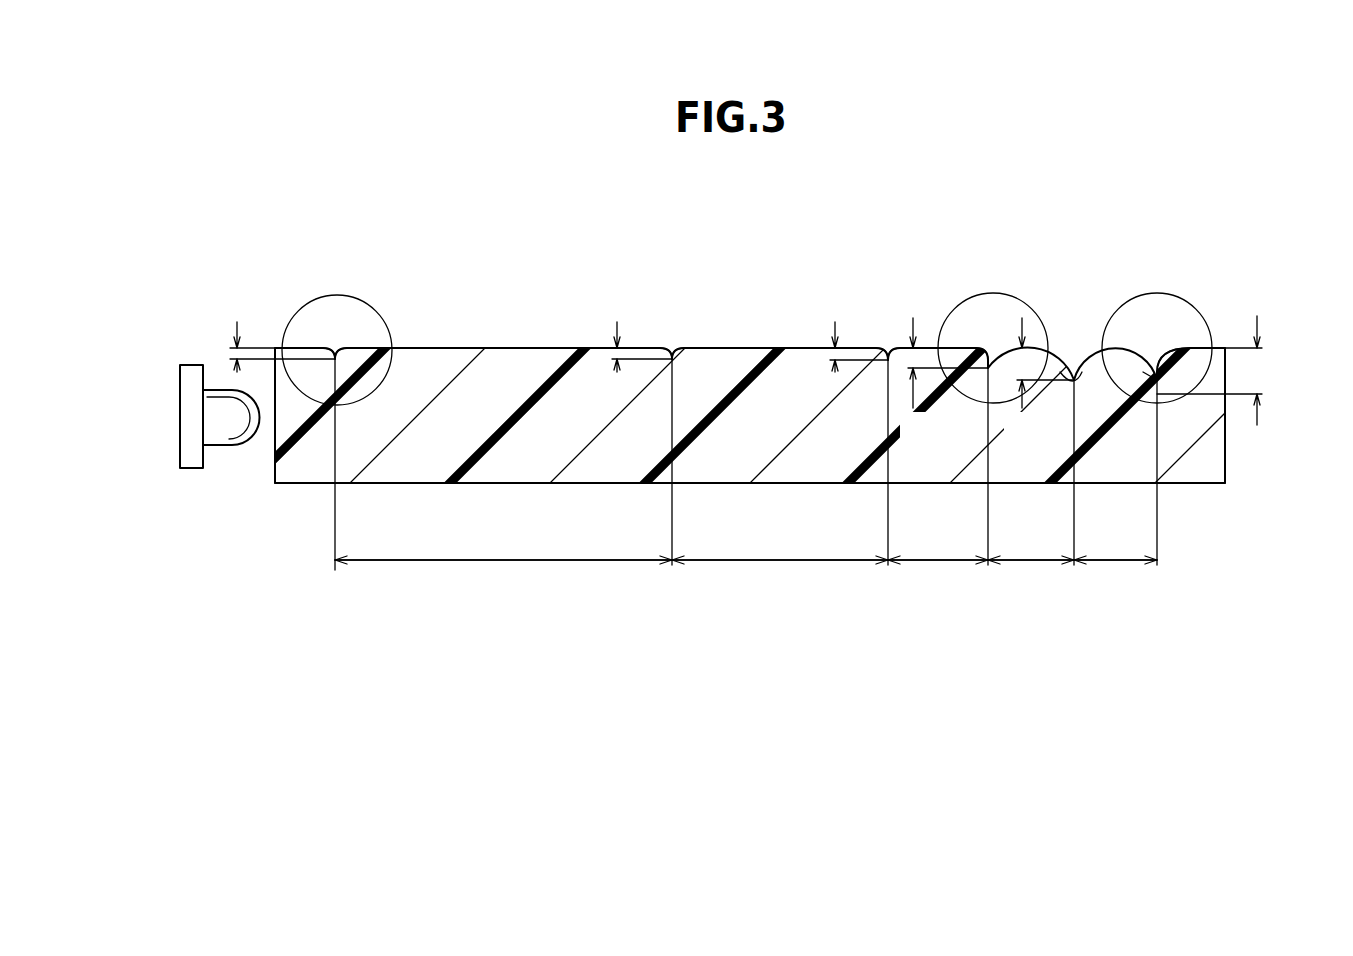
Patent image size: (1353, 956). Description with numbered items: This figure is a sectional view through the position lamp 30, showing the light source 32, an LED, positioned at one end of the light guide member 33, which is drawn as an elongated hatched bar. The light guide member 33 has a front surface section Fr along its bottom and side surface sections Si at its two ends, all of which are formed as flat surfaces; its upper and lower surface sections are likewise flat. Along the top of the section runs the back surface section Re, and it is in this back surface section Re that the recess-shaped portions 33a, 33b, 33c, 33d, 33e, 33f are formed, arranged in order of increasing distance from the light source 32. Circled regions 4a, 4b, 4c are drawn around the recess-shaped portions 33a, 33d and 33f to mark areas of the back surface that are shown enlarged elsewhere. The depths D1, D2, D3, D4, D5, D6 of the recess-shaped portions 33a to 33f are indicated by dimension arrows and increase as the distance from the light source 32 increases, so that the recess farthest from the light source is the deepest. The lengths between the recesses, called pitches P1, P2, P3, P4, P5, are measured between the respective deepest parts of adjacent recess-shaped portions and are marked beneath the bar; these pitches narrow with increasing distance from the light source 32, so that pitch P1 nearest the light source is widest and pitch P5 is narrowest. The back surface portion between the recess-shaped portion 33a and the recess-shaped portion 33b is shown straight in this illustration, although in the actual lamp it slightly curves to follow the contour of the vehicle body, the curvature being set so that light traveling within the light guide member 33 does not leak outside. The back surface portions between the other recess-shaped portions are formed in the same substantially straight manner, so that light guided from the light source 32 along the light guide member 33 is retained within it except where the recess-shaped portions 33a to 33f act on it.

The position lamp 30 is at (1166, 168).
The light source 32 is at (180, 418).
The light guide member 33 is at (763, 347).
The recess-shaped portion 33a is at (335, 357).
The recess-shaped portion 33b is at (672, 348).
The recess-shaped portion 33c is at (888, 348).
The recess-shaped portion 33d is at (988, 366).
The recess-shaped portion 33e is at (1074, 378).
The recess-shaped portion 33f is at (1157, 378).
The enlarged view region 4a is at (375, 308).
The enlarged view region 4b is at (1032, 307).
The enlarged view region 4c is at (1195, 307).
The back surface section Re is at (515, 348).
The side surface section Si is at (273, 472).
The front surface section Fr is at (302, 486).
The depth D1 is at (277, 332).
The depth D2 is at (635, 332).
The depth D3 is at (852, 332).
The depth D4 is at (945, 378).
The depth D5 is at (1040, 378).
The depth D6 is at (1225, 370).
The pitch P1 is at (503, 577).
The pitch P2 is at (780, 577).
The pitch P3 is at (938, 576).
The pitch P4 is at (1031, 576).
The pitch P5 is at (1115, 576).